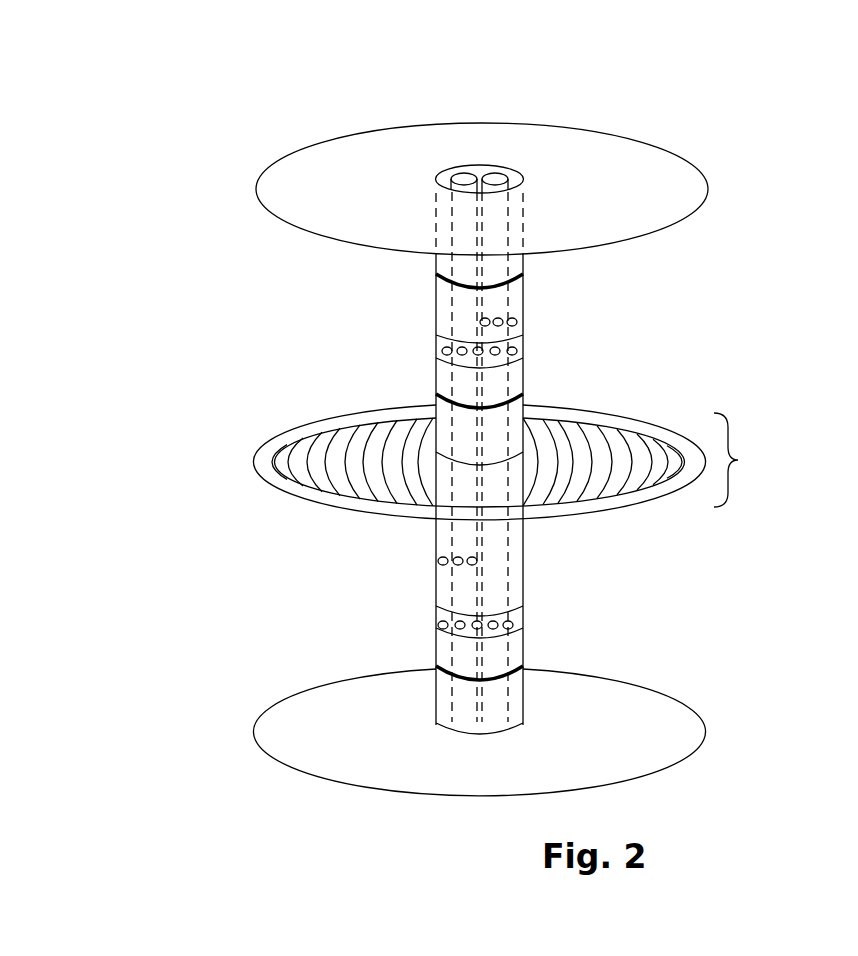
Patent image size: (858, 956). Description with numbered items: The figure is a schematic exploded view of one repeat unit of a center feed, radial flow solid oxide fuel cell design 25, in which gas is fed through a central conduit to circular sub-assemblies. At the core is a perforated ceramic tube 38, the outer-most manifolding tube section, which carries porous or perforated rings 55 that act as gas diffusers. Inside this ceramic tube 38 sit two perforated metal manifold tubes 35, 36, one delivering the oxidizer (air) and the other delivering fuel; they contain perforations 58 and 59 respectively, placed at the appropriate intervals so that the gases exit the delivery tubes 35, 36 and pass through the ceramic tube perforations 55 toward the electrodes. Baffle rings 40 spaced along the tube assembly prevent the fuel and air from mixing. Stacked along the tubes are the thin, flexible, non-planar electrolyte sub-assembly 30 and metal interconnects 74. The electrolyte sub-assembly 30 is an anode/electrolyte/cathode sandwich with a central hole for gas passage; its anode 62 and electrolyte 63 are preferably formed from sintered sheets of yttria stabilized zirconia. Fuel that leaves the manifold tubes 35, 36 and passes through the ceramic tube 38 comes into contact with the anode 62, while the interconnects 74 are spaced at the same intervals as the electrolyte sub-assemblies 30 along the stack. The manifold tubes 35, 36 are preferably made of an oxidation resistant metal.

The center feed fuel cell design 25 is at (447, 412).
The electrolyte sub-assembly 30 is at (445, 463).
The perforated metal manifold tube 35 is at (455, 161).
The perforated metal manifold tube 36 is at (500, 161).
The perforated ceramic tube 38 is at (532, 161).
The baffle ring 40 is at (533, 275).
The perforated rings 55 is at (534, 350).
The perforations 58 is at (496, 566).
The perforations 59 is at (529, 321).
The anode 62 is at (368, 450).
The electrolyte 63 is at (238, 464).
The metal interconnect 74 is at (715, 167).